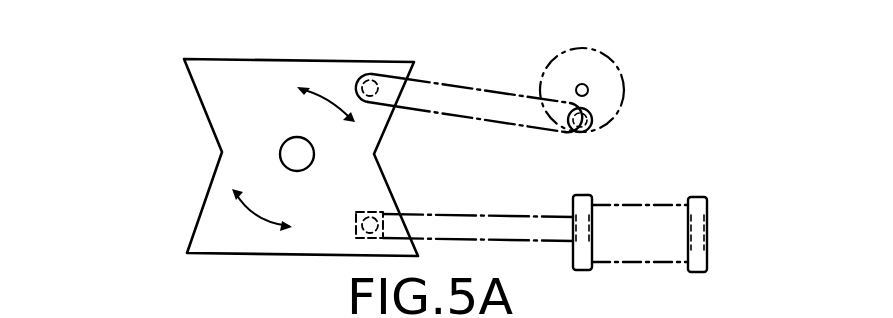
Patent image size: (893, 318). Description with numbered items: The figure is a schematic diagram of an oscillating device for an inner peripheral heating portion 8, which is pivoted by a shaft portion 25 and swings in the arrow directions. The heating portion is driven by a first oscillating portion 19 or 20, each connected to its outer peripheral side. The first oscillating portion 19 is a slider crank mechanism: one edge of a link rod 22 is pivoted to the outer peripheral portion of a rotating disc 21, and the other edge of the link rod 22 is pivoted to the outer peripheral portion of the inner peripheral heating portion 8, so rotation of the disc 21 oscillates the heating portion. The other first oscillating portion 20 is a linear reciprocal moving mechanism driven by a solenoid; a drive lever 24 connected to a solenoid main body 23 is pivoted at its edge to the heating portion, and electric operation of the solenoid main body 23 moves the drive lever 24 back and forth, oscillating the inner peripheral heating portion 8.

The inner peripheral heating portion 8 is at (255, 70).
The first oscillating portion 19 is at (486, 68).
The first oscillating portion 20 is at (554, 192).
The disc 21 is at (620, 88).
The link rod 22 is at (453, 90).
The solenoid main body 23 is at (637, 210).
The drive lever 24 is at (448, 215).
The shaft portion 25 is at (287, 150).